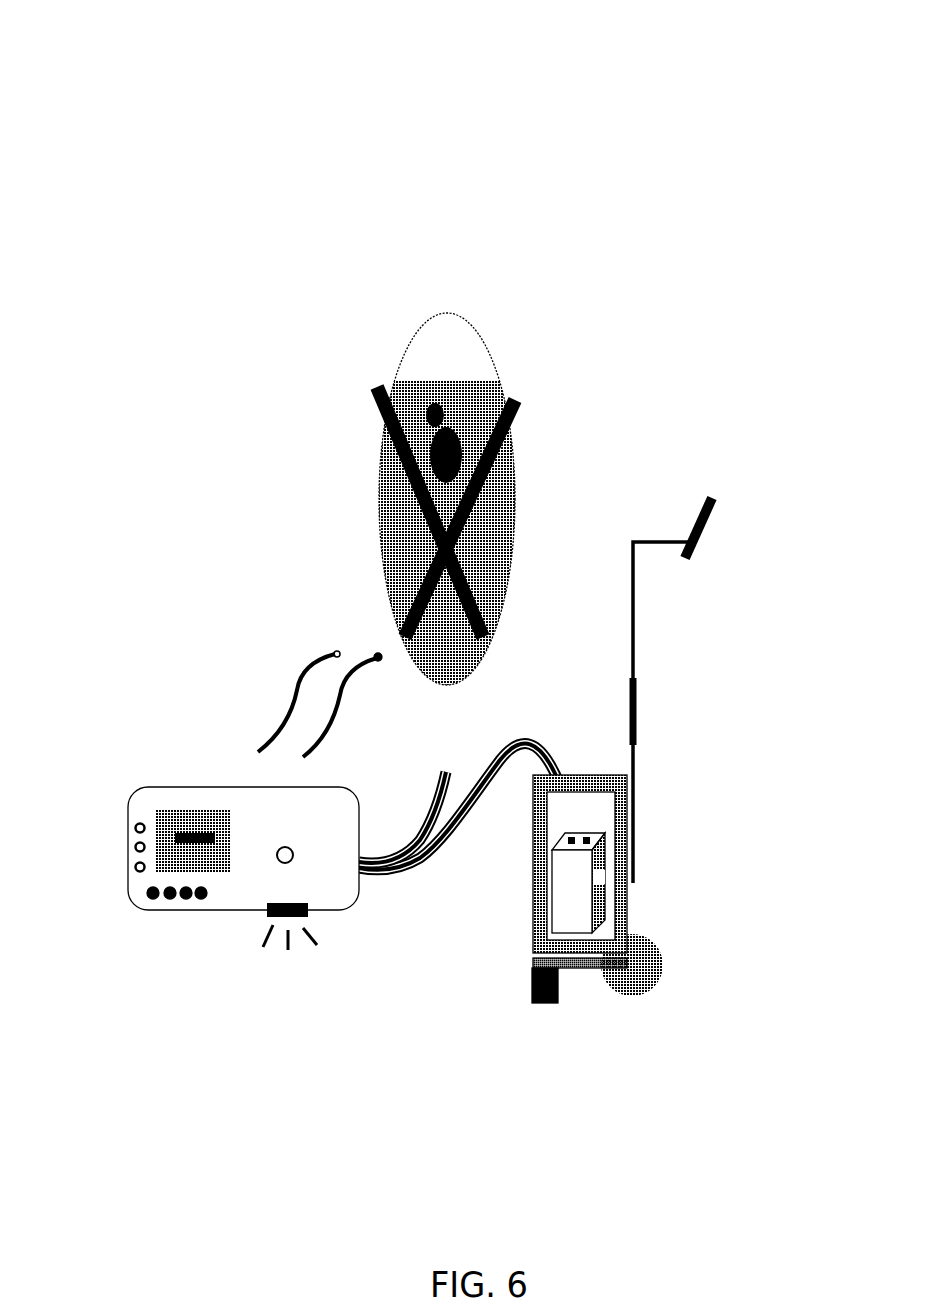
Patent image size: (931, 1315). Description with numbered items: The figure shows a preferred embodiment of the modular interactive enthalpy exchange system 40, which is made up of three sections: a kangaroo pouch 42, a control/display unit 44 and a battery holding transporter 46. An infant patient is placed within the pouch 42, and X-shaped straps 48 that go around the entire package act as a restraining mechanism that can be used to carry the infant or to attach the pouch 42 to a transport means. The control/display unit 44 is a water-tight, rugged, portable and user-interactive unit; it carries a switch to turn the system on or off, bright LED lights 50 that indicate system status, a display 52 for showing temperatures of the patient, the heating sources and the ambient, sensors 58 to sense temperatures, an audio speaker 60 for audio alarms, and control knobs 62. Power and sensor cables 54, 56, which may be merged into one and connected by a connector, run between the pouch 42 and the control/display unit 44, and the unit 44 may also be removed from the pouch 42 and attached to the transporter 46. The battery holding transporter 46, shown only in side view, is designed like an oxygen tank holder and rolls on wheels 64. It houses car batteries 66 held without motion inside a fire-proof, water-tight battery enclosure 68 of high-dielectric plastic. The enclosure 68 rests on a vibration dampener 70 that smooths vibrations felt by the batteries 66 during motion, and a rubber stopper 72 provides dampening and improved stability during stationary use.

The modular system 40 is at (556, 100).
The kangaroo pouch 42 is at (462, 322).
The control/display unit 44 is at (213, 787).
The battery holding transporter 46 is at (703, 443).
The straps 48 is at (370, 393).
The LED lights 50 is at (119, 820).
The display 52 is at (178, 812).
The power and sensor cable 54 is at (315, 657).
The power and sensor cable 56 is at (360, 655).
The sensors 58 is at (290, 808).
The audio speaker 60 is at (310, 897).
The control knobs 62 is at (153, 920).
The wheels 64 is at (645, 990).
The batteries 66 is at (600, 880).
The battery enclosure 68 is at (600, 770).
The vibration dampener 70 is at (572, 975).
The rubber stopper 72 is at (542, 1008).